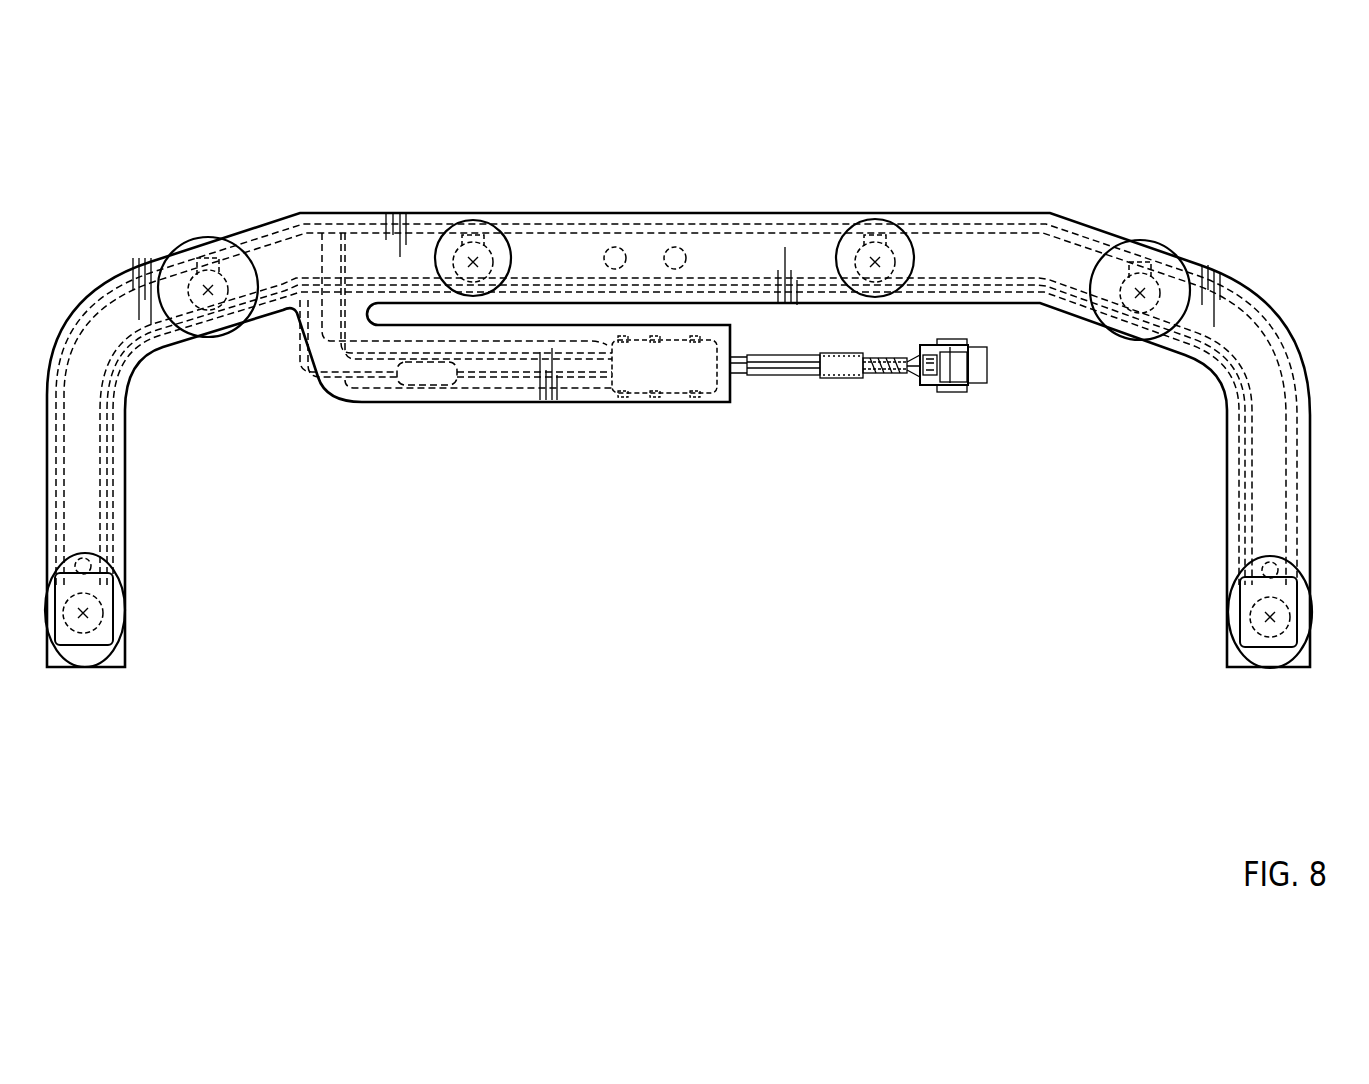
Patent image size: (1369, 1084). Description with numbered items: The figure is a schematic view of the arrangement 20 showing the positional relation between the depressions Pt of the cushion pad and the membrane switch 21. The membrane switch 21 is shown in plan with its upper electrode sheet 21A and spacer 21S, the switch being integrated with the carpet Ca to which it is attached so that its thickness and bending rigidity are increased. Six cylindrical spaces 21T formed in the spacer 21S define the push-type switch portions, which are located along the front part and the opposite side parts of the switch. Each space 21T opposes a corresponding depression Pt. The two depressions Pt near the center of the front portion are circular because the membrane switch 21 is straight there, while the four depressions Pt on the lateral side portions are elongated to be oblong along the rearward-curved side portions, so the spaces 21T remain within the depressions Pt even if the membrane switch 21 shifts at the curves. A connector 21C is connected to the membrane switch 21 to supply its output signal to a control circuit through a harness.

The bumper 20 is at (744, 532).
The membrane switch 21 is at (513, 382).
The upper electrode sheet 21A is at (741, 256).
The spacer 21S is at (589, 255).
The cylindrical space 21T is at (208, 282).
The connector 21C is at (957, 372).
The depression Pt is at (457, 229).
The carpet Ca is at (988, 221).